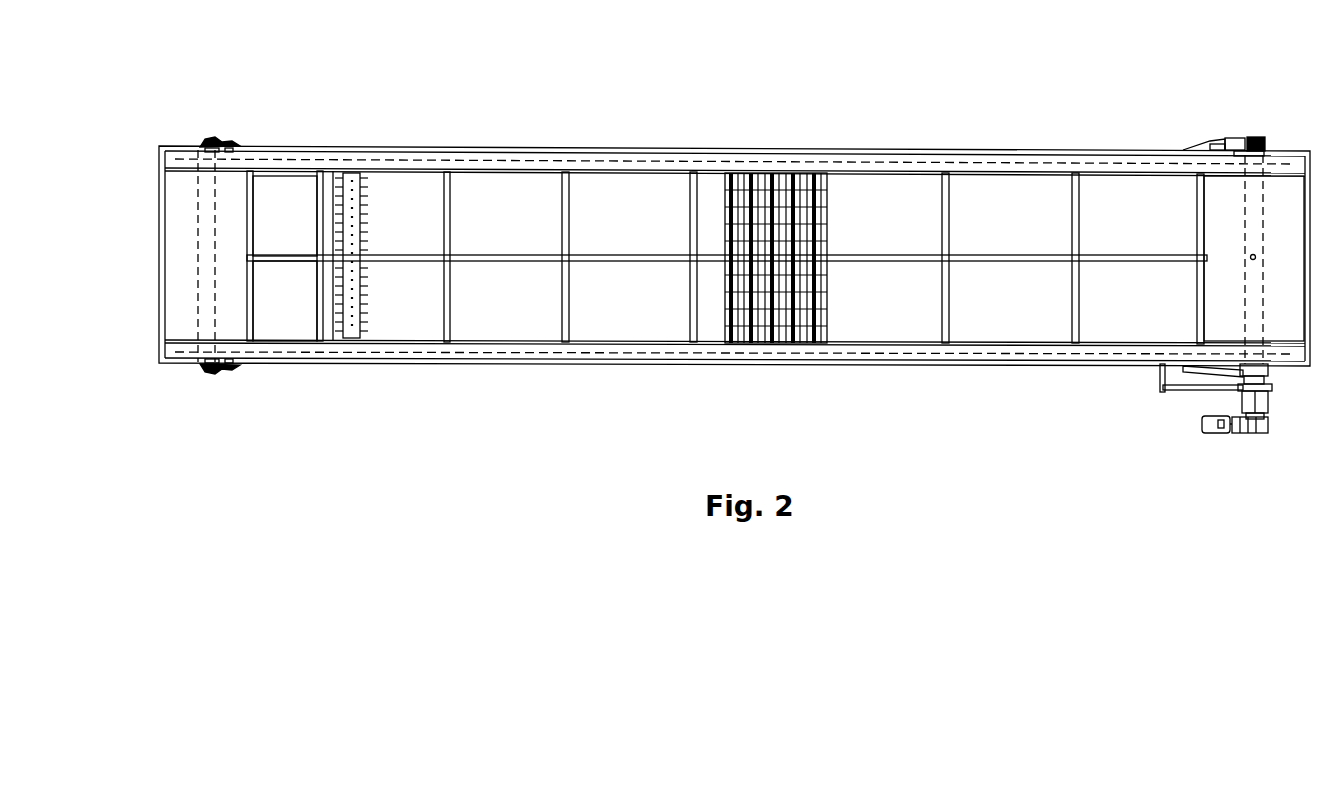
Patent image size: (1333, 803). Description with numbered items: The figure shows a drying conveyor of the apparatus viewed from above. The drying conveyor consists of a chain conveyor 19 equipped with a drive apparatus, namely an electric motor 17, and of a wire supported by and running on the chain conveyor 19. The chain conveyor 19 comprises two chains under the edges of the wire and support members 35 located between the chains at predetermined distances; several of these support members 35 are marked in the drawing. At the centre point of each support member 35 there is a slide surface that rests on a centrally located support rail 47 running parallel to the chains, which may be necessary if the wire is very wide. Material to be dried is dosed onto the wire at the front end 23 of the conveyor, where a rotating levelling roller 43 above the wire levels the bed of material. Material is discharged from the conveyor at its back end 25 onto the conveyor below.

The electric motor 17 is at (1200, 423).
The chain conveyor 19 is at (415, 365).
The front end 23 is at (284, 220).
The back end 25 is at (1232, 210).
The support member 35 is at (807, 172).
The levelling roller 43 is at (353, 183).
The support rail 47 is at (1040, 255).